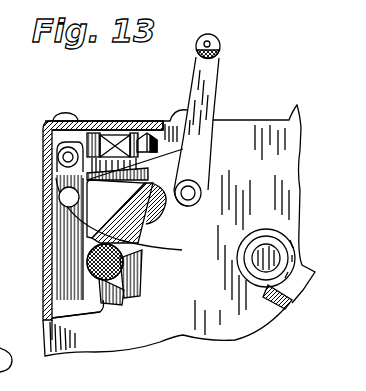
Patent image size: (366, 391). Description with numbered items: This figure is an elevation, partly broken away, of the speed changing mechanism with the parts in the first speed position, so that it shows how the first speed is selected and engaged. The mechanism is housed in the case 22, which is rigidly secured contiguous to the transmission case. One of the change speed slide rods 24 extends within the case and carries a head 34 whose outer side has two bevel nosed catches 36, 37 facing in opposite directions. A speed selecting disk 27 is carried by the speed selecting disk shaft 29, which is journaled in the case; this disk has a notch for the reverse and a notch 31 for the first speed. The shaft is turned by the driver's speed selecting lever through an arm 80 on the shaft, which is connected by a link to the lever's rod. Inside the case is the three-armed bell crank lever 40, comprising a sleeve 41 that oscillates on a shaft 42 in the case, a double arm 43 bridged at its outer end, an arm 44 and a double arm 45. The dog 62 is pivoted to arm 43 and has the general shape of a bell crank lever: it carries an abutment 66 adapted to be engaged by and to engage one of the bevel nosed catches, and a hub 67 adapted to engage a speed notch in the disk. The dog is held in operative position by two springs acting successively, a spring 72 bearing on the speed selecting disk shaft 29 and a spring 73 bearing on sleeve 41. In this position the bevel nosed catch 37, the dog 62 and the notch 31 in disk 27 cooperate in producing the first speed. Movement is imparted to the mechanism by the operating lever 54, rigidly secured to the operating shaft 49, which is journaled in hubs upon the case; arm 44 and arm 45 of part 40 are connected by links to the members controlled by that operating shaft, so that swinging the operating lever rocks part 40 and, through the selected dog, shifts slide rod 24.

The case 22 is at (213, 315).
The change speed slide rod 24 is at (163, 127).
The speed selecting disk 27 is at (152, 212).
The speed selecting disk shaft 29 is at (196, 191).
The notch for first speed 31 is at (147, 190).
The head 34 is at (101, 124).
The bevel nosed catch 36 is at (52, 126).
The bevel nosed catch 37 is at (147, 125).
The three-armed bell crank lever 40 is at (76, 297).
The sleeve 41 is at (128, 272).
The shaft 42 is at (100, 262).
The double arm 43 is at (62, 227).
The arm 44 is at (130, 230).
The double arm 45 is at (143, 294).
The operating shaft 49 is at (268, 262).
The operating lever 54 is at (278, 288).
The dog 62 is at (63, 170).
The abutment 66 is at (183, 149).
The hub 67 is at (58, 196).
The spring 72 is at (97, 178).
The spring 73 is at (105, 236).
The arm 80 is at (210, 88).